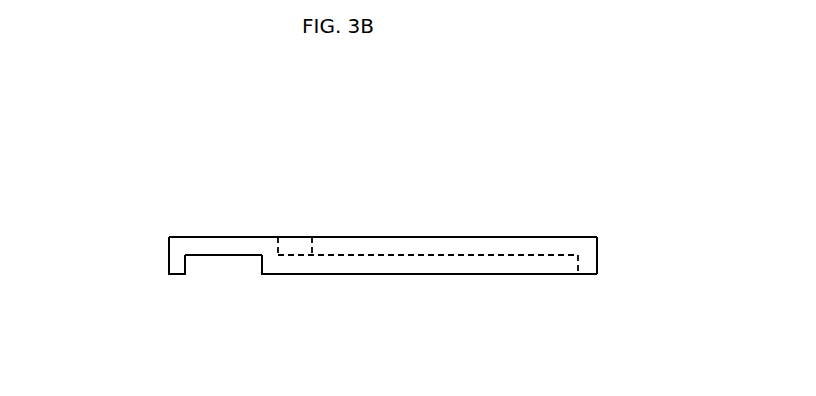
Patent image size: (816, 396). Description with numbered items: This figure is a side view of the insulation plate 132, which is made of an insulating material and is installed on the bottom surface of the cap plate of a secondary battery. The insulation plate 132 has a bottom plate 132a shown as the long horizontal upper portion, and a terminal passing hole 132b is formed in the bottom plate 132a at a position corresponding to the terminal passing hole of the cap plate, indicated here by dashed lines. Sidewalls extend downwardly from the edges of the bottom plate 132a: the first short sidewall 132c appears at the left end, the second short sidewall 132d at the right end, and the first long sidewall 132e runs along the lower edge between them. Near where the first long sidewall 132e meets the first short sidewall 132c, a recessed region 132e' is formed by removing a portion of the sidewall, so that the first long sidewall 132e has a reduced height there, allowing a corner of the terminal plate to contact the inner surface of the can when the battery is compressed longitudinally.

The insulation plate 132 is at (379, 237).
The bottom plate 132a is at (372, 243).
The terminal passing hole 132b is at (292, 248).
The first short sidewall 132c is at (169, 252).
The second short sidewall 132d is at (592, 262).
The first long sidewall 132e is at (429, 291).
The recessed region 132e' is at (223, 291).